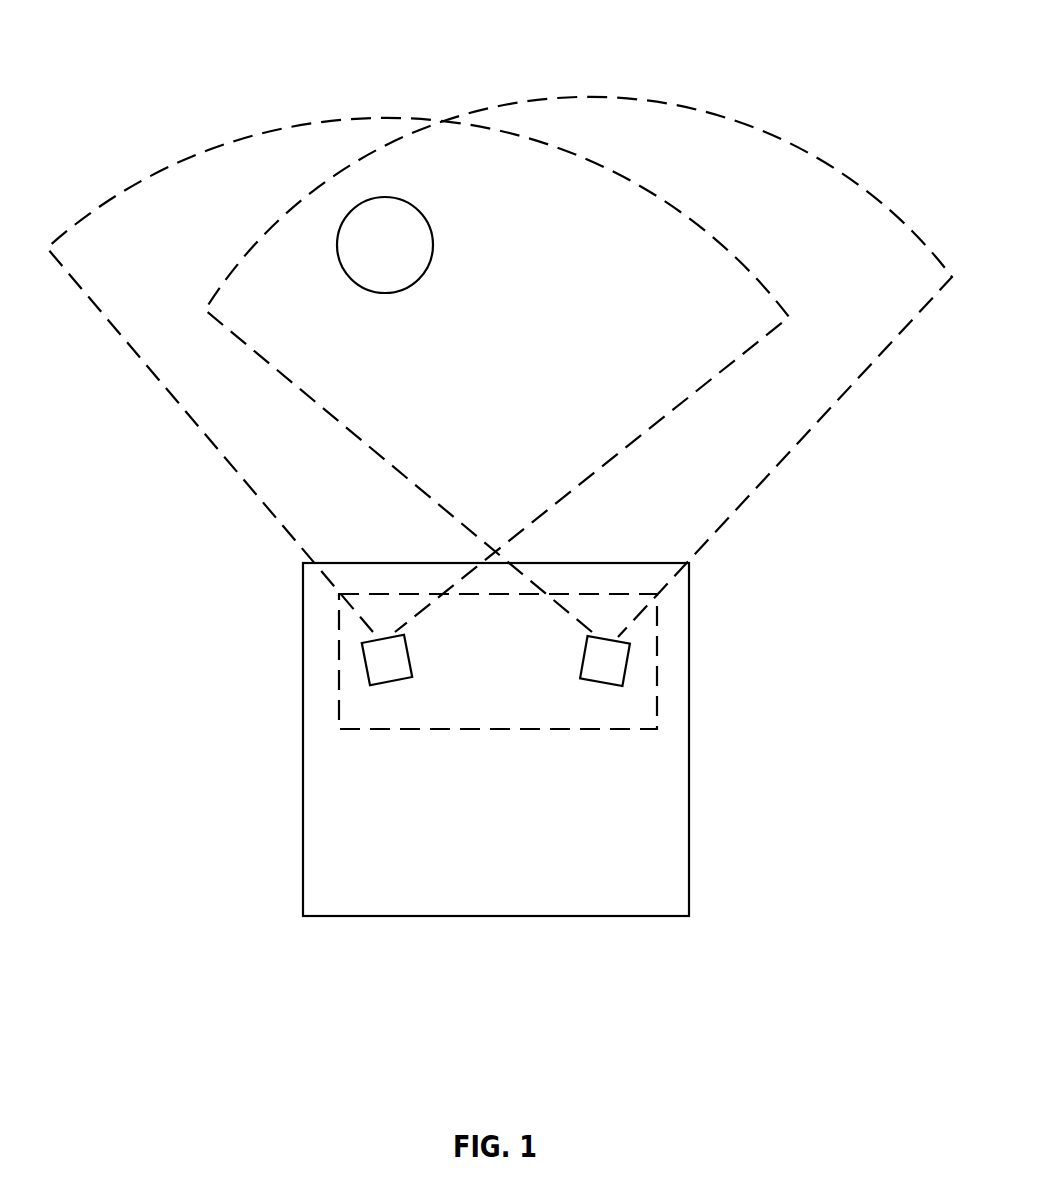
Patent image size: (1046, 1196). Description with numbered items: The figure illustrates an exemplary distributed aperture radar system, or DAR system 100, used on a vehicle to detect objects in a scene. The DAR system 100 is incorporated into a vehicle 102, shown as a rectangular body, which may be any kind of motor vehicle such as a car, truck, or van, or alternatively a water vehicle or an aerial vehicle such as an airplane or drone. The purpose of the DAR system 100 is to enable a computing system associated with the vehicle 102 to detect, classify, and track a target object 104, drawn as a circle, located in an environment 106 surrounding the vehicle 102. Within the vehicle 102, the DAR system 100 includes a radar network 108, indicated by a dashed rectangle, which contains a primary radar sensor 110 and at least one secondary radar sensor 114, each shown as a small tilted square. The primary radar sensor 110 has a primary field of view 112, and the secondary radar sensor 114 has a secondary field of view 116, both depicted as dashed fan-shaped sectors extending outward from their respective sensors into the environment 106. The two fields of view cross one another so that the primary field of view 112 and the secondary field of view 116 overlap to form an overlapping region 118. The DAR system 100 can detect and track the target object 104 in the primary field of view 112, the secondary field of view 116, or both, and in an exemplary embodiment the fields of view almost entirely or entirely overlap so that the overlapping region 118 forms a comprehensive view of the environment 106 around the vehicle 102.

The DAR system 100 is at (141, 149).
The vehicle 102 is at (300, 870).
The target object 104 is at (378, 212).
The environment 106 is at (475, 53).
The radar network 108 is at (530, 730).
The primary radar sensor 110 is at (378, 663).
The primary field of view 112 is at (250, 485).
The secondary radar sensor 114 is at (612, 663).
The secondary field of view 116 is at (758, 485).
The overlapping region 118 is at (633, 205).